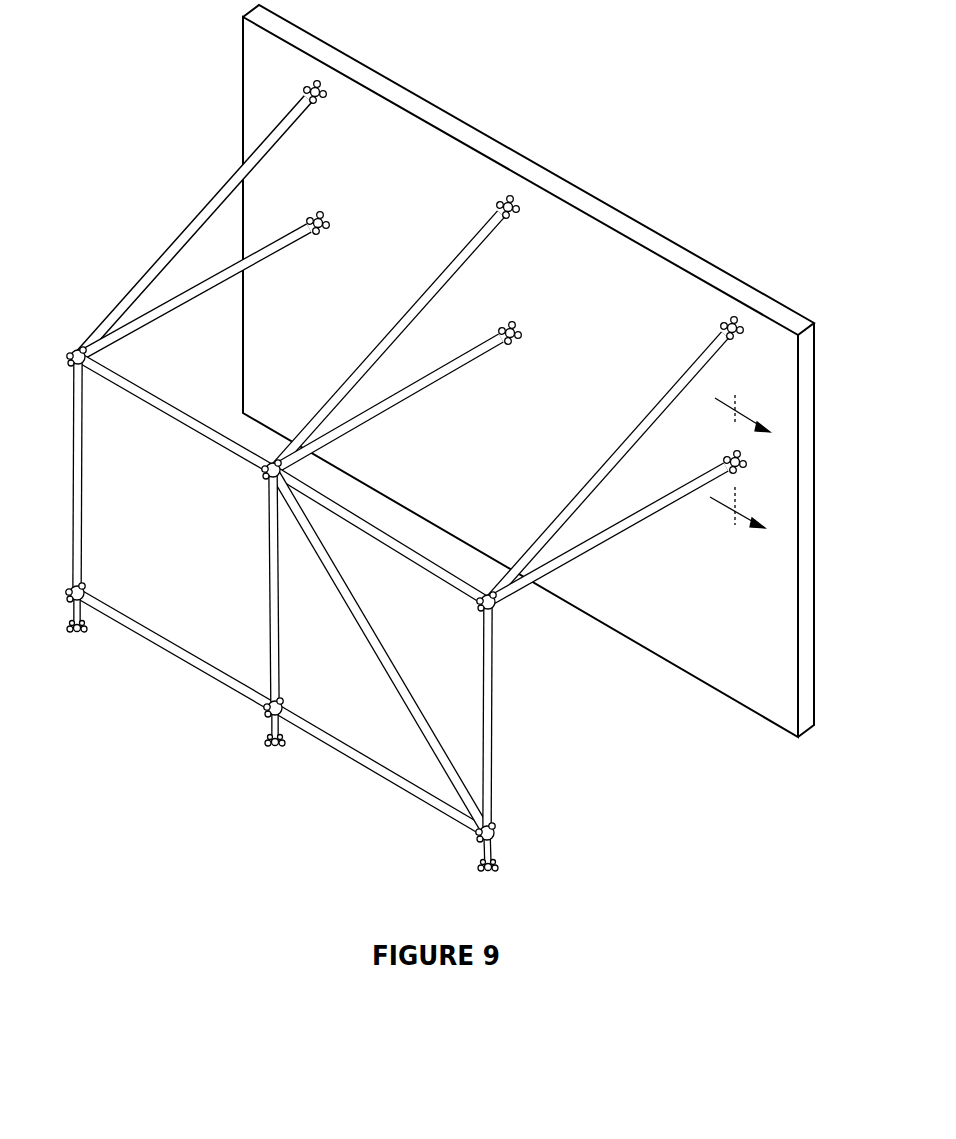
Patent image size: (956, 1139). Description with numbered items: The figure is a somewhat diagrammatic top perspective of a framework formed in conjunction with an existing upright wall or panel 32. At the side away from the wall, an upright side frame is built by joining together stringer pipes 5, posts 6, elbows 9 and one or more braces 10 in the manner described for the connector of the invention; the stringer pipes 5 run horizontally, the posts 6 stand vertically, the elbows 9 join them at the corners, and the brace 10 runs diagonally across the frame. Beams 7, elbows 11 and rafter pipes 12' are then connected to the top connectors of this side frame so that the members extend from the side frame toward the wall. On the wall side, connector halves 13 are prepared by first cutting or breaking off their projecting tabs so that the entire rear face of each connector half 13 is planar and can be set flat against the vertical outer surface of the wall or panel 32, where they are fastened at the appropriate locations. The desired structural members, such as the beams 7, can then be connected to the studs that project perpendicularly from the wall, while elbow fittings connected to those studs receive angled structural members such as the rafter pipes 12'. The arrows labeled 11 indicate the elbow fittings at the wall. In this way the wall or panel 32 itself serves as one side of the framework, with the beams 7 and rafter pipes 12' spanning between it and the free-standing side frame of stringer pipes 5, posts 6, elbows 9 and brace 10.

The wall or panel 32 is at (778, 313).
The rafter pipes 12' is at (193, 228).
The beams 7 is at (183, 303).
The stringer pipes 5 is at (405, 548).
The posts 6 is at (277, 640).
The braces 10 is at (372, 655).
The elbows 9 is at (260, 482).
The connector halves 13 is at (517, 220).
The elbows 11 is at (497, 207).